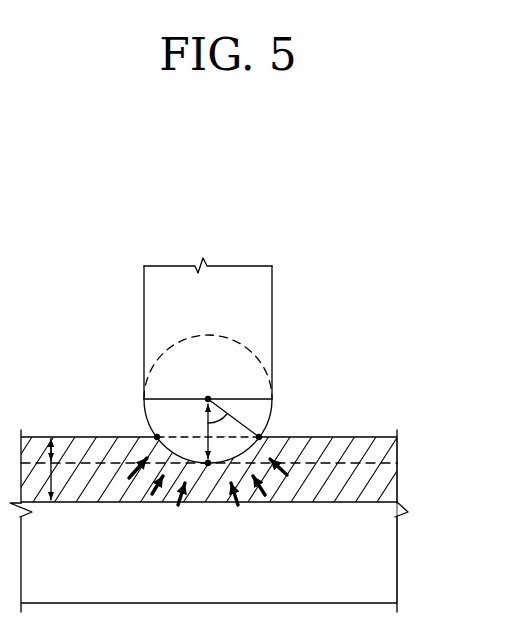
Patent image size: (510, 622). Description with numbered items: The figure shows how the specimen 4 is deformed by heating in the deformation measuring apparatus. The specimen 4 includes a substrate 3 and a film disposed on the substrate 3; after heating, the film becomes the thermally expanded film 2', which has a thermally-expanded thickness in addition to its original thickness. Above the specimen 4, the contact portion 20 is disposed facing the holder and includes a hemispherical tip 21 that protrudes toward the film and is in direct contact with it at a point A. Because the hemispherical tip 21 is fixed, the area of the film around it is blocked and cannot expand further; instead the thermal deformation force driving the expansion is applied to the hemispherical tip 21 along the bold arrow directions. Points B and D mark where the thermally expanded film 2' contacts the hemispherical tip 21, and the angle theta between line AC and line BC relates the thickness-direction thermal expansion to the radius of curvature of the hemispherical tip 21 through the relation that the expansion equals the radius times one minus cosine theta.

The contact portion 20 is at (163, 310).
The hemispherical tip 21 is at (143, 424).
The thermally expanded film 2' is at (226, 473).
The substrate 3 is at (383, 548).
The specimen 4 is at (455, 472).